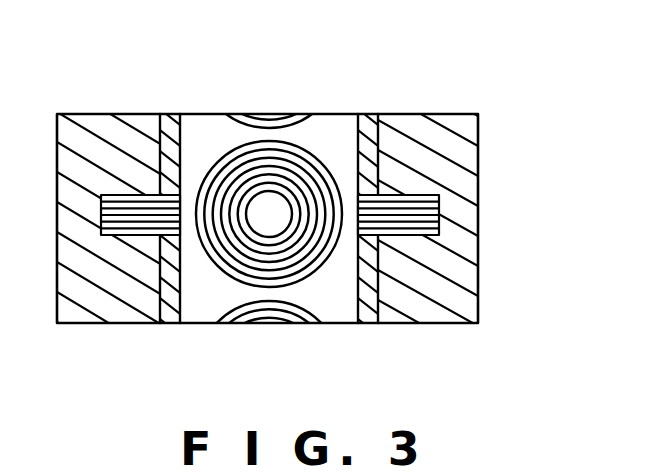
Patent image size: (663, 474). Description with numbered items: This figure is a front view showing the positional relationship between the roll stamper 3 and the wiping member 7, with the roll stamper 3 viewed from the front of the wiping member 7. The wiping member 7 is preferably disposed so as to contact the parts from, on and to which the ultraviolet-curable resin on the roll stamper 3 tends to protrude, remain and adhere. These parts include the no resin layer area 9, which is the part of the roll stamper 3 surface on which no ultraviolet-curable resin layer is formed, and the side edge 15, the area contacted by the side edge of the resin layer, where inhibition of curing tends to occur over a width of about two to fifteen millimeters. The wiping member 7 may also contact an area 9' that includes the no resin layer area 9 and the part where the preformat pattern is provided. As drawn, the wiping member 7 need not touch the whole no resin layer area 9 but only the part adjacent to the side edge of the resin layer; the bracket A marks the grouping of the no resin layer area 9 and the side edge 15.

The roll stamper 3 is at (478, 268).
The wiping member 7 is at (439, 202).
The no resin layer area 9 is at (267, 215).
The area including the no resin layer area and the preformat pattern 9' is at (270, 223).
The side edge 15 is at (168, 127).
The block assembly A is at (185, 50).